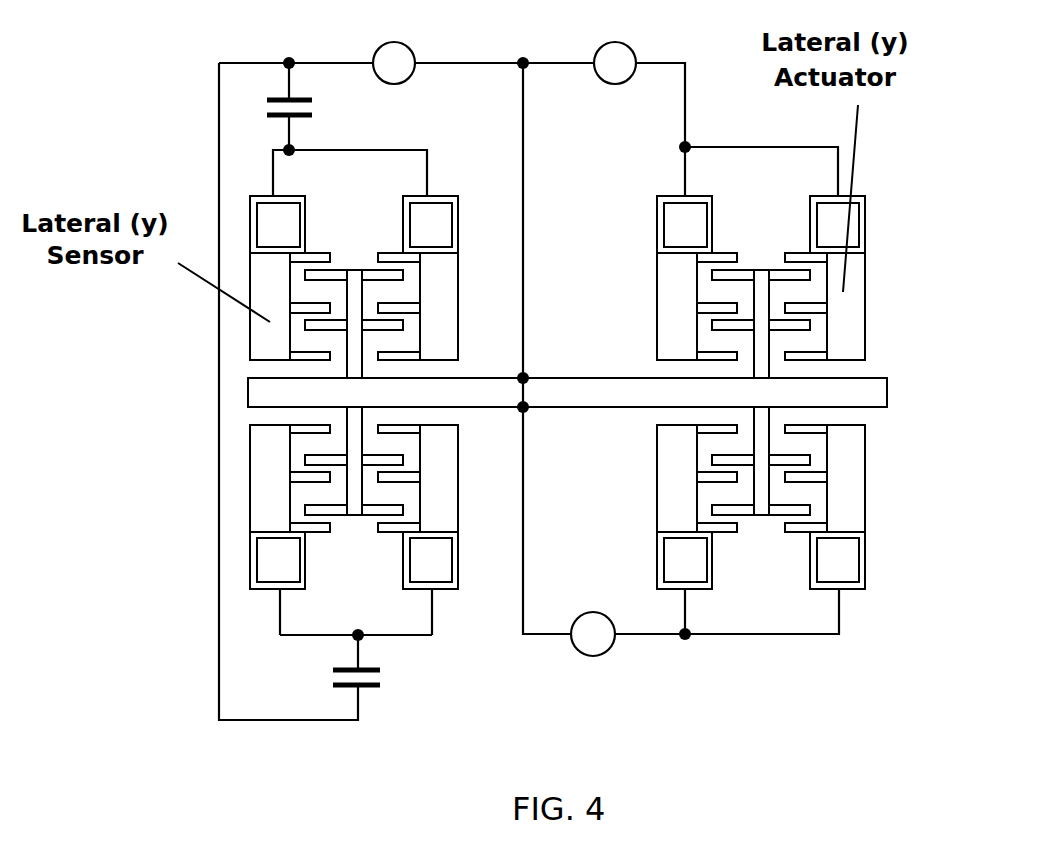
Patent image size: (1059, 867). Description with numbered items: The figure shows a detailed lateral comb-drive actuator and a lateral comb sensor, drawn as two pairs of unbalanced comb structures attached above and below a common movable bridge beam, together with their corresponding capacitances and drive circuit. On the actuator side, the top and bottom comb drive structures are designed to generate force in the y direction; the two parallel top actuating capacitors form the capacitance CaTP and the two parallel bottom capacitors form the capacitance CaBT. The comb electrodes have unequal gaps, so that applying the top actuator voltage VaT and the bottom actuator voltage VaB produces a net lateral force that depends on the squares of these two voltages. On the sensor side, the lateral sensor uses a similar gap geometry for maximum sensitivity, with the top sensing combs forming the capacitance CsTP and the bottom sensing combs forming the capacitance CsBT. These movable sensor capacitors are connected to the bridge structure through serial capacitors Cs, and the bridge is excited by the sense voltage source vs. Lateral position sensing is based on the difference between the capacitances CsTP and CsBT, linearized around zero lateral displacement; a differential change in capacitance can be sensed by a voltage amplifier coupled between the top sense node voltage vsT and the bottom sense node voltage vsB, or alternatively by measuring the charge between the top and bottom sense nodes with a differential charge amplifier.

The sense voltage source vs is at (380, 56).
The top actuator voltage VaT is at (630, 60).
The bottom actuator voltage VaB is at (585, 642).
The serial capacitor Cs is at (306, 397).
The top sense node voltage vsT is at (320, 147).
The bottom sense node voltage vsB is at (390, 627).
The top parallel sensing capacitance CsTP is at (354, 287).
The bottom parallel sensing capacitance CsBT is at (354, 498).
The top parallel actuating capacitance CaTP is at (761, 287).
The bottom parallel actuating capacitance CaBT is at (761, 498).